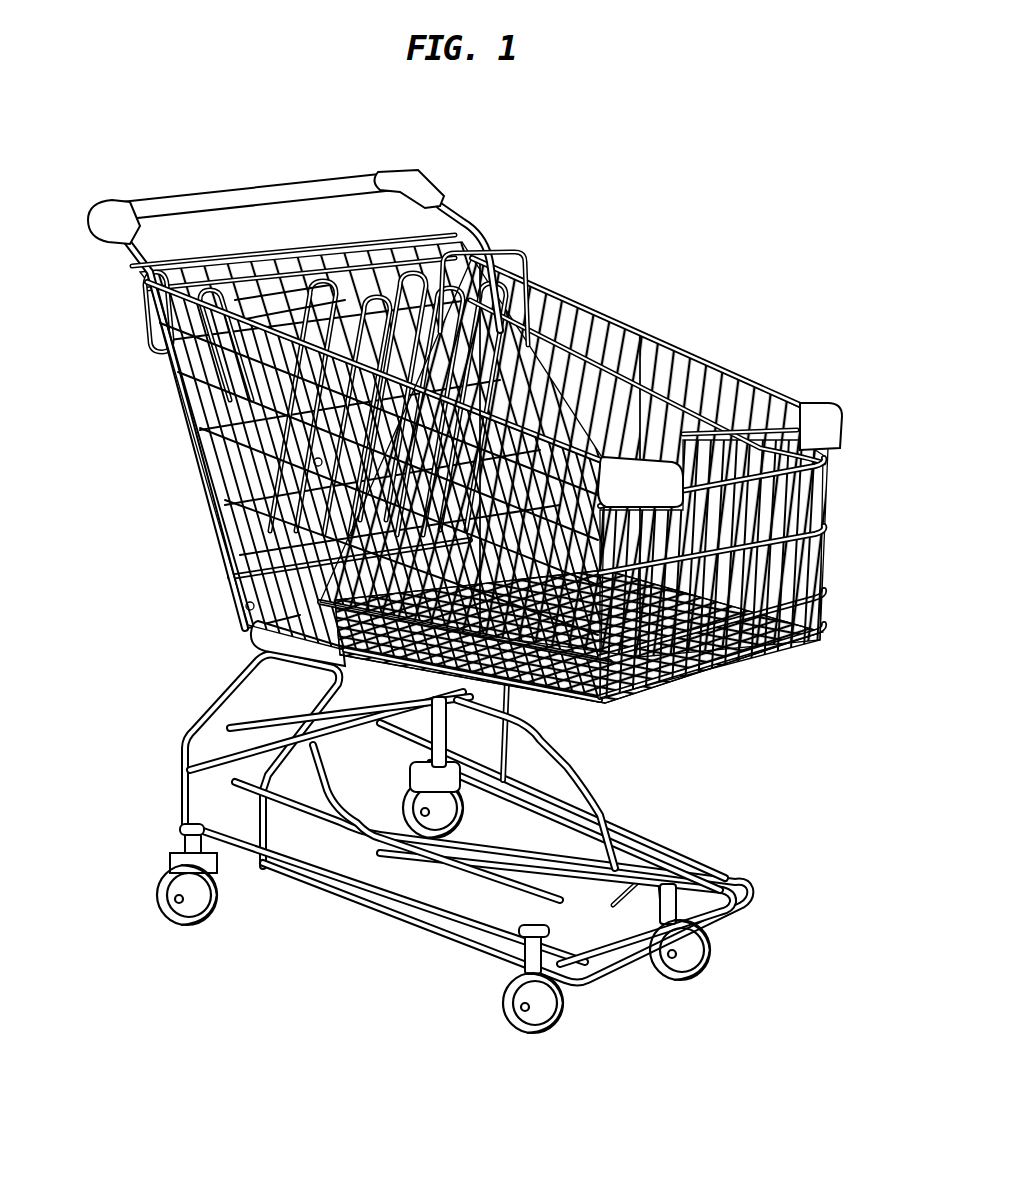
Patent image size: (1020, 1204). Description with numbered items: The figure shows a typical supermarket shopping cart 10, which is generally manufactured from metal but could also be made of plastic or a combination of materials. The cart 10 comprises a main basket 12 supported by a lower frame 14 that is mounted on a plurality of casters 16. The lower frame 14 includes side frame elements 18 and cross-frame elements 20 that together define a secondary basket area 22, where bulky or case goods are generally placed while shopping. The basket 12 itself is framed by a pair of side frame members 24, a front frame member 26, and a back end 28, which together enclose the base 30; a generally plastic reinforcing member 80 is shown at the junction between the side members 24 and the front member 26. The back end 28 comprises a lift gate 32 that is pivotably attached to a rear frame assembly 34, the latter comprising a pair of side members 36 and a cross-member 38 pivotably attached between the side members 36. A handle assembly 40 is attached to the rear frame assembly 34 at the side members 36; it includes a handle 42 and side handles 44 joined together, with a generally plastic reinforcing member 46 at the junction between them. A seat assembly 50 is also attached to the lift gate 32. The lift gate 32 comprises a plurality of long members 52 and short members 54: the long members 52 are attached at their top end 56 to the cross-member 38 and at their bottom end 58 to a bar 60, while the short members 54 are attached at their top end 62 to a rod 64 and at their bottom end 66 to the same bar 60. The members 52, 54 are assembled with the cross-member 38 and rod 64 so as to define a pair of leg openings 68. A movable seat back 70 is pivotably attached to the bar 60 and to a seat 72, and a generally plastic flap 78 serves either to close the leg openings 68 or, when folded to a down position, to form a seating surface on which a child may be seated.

The shopping cart 10 is at (765, 292).
The main basket 12 is at (826, 495).
The lower frame 14 is at (215, 708).
The casters 16 is at (160, 903).
The side frame elements 18 is at (570, 778).
The cross-frame elements 20 is at (192, 776).
The secondary basket area 22 is at (567, 870).
The side frame members 24 is at (780, 398).
The front frame member 26 is at (818, 575).
The back end 28 is at (170, 352).
The base 30 is at (700, 690).
The lift gate 32 is at (330, 380).
The rear frame assembly 34 is at (74, 362).
The side members 36 is at (258, 565).
The cross-member 38 is at (253, 313).
The handle assembly 40 is at (108, 140).
The handle 42 is at (330, 178).
The side handles 44 is at (452, 215).
The reinforcing member 46 is at (428, 175).
The seat assembly 50 is at (528, 255).
The long members 52 is at (330, 448).
The short members 54 is at (333, 330).
The top end 56 is at (322, 302).
The bottom end 58 is at (248, 605).
The bar 60 is at (253, 638).
The top end 62 is at (330, 424).
The rod 64 is at (215, 430).
The bottom end 66 is at (262, 627).
The leg openings 68 is at (160, 305).
The movable seat back 70 is at (385, 320).
The seat 72 is at (265, 538).
The flap 78 is at (315, 462).
The reinforcing member 80 is at (842, 432).